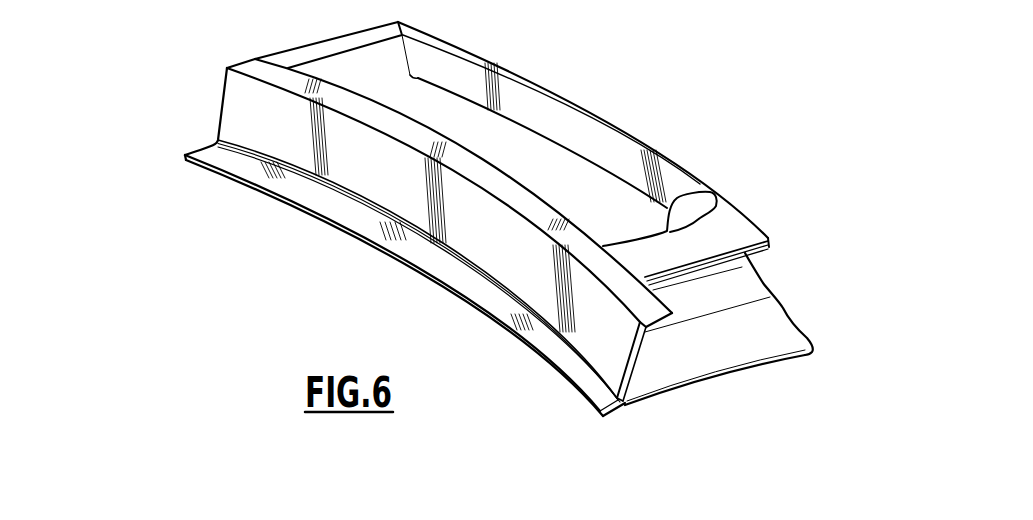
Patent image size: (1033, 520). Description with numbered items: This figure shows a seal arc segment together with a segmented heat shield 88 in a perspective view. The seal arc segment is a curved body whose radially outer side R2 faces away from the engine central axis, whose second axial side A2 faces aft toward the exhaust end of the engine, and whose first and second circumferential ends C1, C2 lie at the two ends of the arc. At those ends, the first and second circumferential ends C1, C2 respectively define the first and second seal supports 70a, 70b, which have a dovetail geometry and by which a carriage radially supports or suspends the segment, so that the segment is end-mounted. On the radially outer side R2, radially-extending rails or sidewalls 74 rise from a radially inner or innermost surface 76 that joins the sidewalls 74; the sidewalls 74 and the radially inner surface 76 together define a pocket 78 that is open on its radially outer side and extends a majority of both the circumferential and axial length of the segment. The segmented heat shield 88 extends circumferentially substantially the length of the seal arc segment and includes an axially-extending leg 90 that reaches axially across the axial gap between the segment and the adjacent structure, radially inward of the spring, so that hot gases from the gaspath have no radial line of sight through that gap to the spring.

The first seal support 70a is at (665, 368).
The second seal support 70b is at (188, 114).
The sidewalls 74 is at (335, 65).
The radially inner surface 76 is at (442, 97).
The pocket 78 is at (518, 124).
The segmented heat shield 88 is at (644, 381).
The axially-extending leg 90 is at (605, 420).
The second axial side A2 is at (598, 112).
The radially outer side R2 is at (705, 152).
The first circumferential end C1 is at (803, 297).
The second circumferential end C2 is at (118, 124).